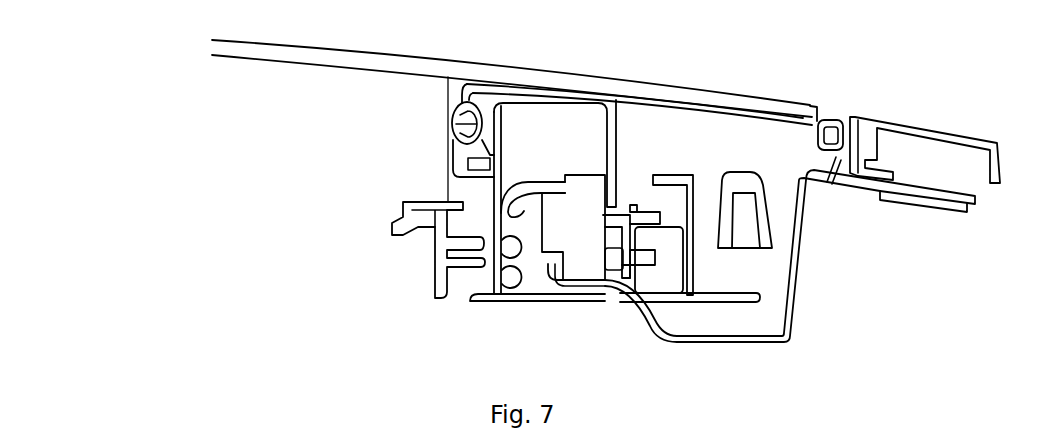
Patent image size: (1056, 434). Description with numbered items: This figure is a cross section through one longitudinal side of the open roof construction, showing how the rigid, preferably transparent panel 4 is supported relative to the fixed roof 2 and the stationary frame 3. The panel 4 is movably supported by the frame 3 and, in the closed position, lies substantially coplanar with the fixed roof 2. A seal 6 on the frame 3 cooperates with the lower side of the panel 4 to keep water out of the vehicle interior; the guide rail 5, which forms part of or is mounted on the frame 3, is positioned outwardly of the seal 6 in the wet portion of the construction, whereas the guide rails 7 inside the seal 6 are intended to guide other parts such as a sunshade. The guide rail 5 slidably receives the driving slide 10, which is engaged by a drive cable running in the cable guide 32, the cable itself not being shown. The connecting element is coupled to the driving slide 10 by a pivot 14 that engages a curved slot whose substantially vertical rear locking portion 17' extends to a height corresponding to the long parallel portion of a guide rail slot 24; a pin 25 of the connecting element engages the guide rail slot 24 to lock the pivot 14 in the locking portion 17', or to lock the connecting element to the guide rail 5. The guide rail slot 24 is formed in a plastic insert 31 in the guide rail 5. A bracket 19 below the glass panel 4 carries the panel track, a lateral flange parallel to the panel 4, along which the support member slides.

The fixed roof 2 is at (937, 128).
The frame 3 is at (797, 268).
The panel 4 is at (320, 58).
The guide rail 5 is at (736, 311).
The seal 6 is at (451, 132).
The guide rails 7 is at (438, 244).
The driving slide 10 is at (575, 220).
The pivot 14 is at (612, 233).
The rear locking portion 17' is at (603, 316).
The bracket 19 is at (618, 172).
The guide rail slot 24 is at (645, 262).
The pin 25 is at (630, 267).
The plastic insert 31 is at (665, 258).
The cable guide 32 is at (522, 204).